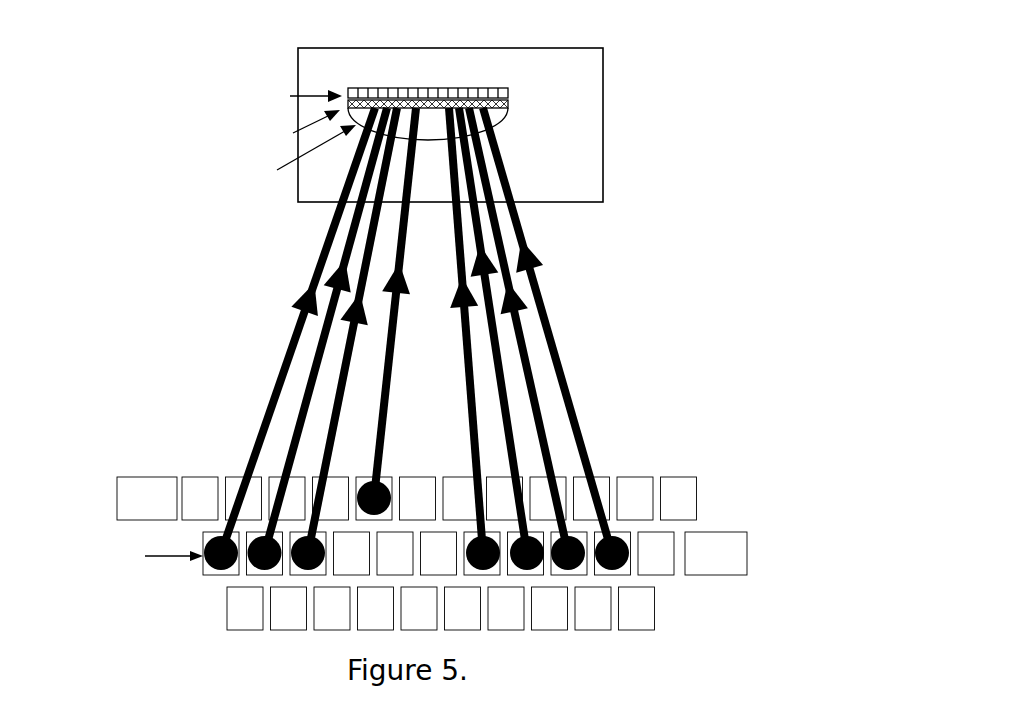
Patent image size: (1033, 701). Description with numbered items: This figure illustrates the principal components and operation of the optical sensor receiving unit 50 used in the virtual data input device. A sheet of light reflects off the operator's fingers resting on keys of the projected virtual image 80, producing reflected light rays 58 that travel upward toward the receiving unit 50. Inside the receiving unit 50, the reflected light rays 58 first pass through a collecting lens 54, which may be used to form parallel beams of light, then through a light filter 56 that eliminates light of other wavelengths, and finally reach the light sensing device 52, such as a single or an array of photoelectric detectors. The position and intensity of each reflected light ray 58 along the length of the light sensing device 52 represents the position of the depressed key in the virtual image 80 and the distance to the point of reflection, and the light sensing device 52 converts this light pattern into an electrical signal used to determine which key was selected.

The optical sensor receiving unit 50 is at (603, 110).
The light sensing device 52 is at (510, 88).
The collecting lens 54 is at (505, 120).
The light filter 56 is at (510, 104).
The reflected light rays 58 is at (553, 350).
The virtual image 80 is at (672, 590).